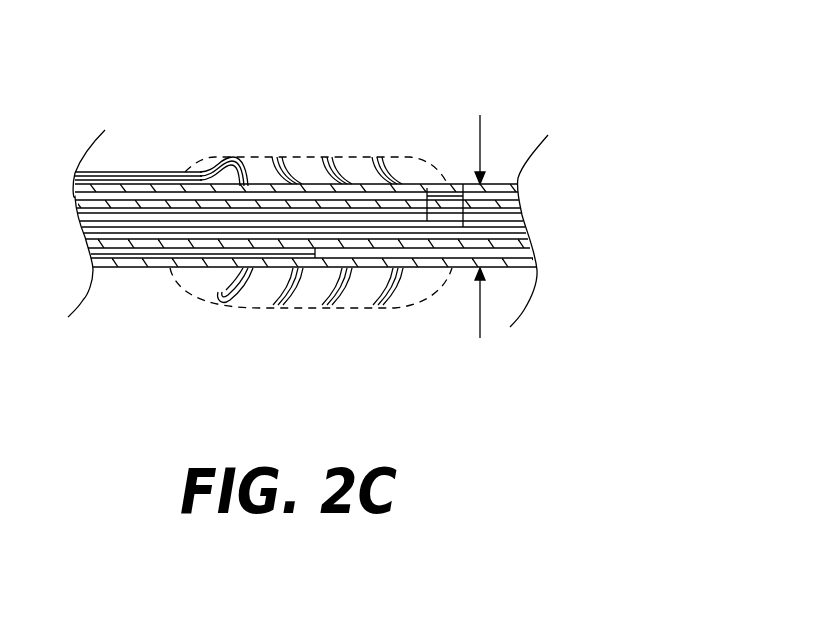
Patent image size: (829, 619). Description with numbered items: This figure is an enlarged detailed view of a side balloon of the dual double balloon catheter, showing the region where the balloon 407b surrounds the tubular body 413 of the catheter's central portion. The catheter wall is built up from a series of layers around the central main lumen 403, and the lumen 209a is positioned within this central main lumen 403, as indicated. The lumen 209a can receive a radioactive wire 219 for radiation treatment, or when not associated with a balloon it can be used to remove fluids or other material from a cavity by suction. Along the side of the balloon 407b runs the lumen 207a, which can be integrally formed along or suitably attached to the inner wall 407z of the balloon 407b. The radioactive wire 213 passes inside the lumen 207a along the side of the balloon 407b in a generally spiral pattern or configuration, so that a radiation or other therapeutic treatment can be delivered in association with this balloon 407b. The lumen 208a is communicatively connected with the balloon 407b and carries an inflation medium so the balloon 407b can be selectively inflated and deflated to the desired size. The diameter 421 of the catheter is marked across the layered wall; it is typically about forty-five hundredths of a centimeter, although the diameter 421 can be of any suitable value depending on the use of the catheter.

The central main lumen 403 is at (122, 243).
The radioactive wire 213 is at (168, 173).
The lumen 207a is at (174, 178).
The lumen 208a is at (155, 260).
The lumen 209a is at (427, 188).
The radioactive wire 219 is at (461, 187).
The tubular body 413 is at (497, 187).
The diameter 421 is at (480, 322).
The inner wall 407z is at (300, 157).
The balloon 407b is at (353, 307).